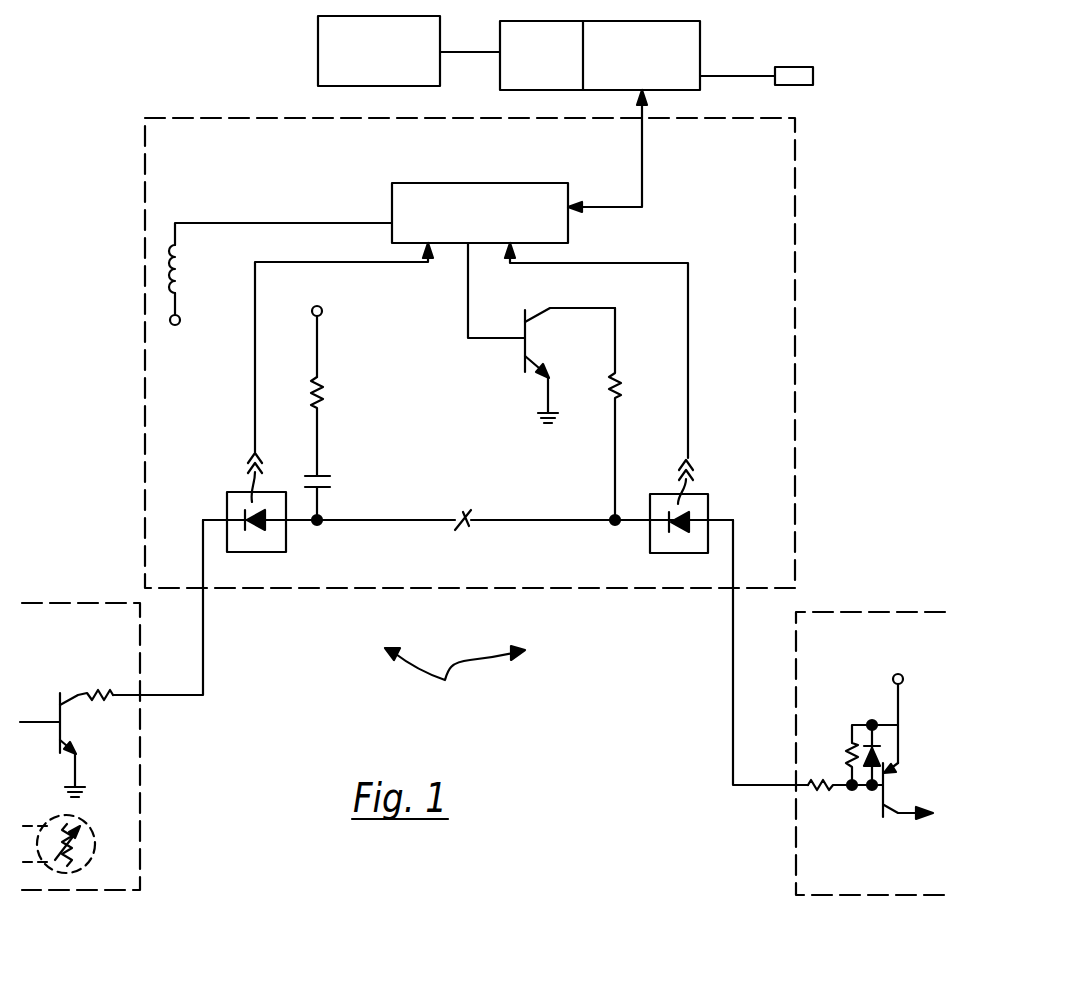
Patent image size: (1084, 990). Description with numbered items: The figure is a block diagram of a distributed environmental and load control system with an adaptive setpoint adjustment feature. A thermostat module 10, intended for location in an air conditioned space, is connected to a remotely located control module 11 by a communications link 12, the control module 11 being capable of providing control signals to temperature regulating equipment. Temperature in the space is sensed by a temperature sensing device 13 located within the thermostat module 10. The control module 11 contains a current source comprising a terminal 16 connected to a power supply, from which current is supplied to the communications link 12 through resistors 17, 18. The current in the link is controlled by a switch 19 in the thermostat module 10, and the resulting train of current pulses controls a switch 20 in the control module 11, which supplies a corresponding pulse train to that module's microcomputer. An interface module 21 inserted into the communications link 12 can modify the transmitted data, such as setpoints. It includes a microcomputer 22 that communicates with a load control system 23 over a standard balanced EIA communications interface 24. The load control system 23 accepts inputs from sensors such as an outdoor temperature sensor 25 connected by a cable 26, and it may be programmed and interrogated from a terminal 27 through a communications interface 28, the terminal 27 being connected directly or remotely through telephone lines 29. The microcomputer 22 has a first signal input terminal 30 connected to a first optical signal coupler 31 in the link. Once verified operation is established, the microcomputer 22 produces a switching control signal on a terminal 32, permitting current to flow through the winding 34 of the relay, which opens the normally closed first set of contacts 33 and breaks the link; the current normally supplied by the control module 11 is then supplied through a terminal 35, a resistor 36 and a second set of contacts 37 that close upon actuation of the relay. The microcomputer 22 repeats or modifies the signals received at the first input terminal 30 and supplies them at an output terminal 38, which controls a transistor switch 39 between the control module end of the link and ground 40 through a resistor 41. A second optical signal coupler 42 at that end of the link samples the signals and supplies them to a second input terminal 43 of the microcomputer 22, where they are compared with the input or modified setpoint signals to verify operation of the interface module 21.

The thermostat module 10 is at (141, 775).
The control module 11 is at (795, 829).
The communications link 12 is at (455, 674).
The temperature sensing device 13 is at (95, 848).
The terminal 16 is at (892, 680).
The resistor 17 is at (850, 744).
The resistor 18 is at (812, 781).
The switch 19 is at (65, 712).
The switch 20 is at (884, 800).
The interface module 21 is at (797, 533).
The microcomputer 22 is at (470, 183).
The load control system 23 is at (700, 40).
The communications interface 24 is at (642, 172).
The outdoor temperature sensor 25 is at (785, 67).
The cable 26 is at (740, 76).
The terminal 27 is at (396, 16).
The communications interface 28 is at (540, 21).
The telephone lines 29 is at (463, 52).
The first signal input terminal 30 is at (440, 255).
The first optical signal coupler 31 is at (235, 491).
The terminal 32 is at (362, 224).
The first set of contacts 33 is at (448, 516).
The winding 34 is at (165, 284).
The terminal 35 is at (322, 312).
The resistor 36 is at (323, 388).
The second set of contacts 37 is at (325, 489).
The output terminal 38 is at (470, 255).
The transistor switch 39 is at (521, 350).
The ground 40 is at (543, 410).
The resistor 41 is at (621, 384).
The second optical signal coupler 42 is at (700, 494).
The second input terminal 43 is at (520, 248).